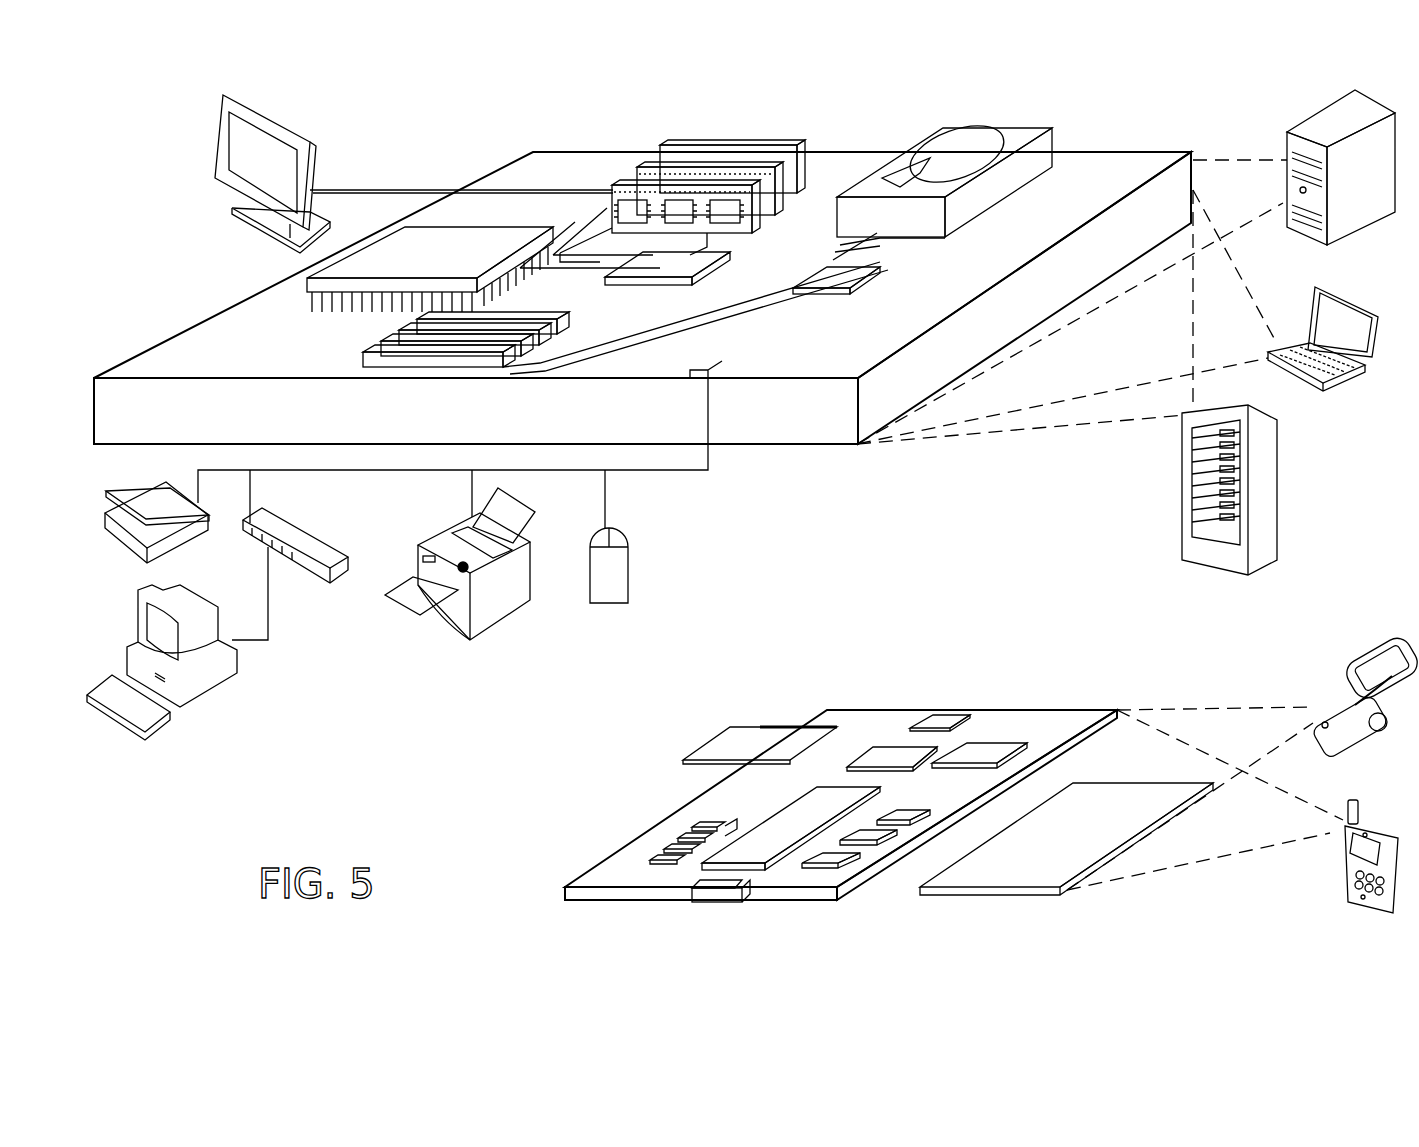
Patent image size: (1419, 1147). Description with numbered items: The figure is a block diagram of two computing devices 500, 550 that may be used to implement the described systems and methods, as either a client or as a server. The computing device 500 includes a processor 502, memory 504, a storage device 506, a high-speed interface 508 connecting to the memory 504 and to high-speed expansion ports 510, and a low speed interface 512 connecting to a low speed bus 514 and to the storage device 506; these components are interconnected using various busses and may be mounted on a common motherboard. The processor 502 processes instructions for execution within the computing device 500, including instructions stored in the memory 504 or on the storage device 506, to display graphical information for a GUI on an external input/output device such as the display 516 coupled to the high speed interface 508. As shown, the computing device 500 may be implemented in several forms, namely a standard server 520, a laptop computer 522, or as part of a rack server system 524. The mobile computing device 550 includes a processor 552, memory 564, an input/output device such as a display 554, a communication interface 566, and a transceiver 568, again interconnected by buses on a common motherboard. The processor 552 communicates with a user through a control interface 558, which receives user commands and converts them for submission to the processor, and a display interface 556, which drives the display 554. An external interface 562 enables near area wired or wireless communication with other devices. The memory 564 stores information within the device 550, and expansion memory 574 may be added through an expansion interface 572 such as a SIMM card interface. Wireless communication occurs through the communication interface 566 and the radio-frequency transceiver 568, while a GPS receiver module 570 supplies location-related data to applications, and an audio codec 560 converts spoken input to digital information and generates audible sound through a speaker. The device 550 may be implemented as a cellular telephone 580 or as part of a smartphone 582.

The computing device 500 is at (445, 113).
The processor 502 is at (282, 292).
The memory 504 is at (670, 142).
The storage device 506 is at (937, 131).
The high-speed interface 508 is at (633, 263).
The high-speed expansion ports 510 is at (387, 337).
The low speed interface 512 is at (857, 273).
The low speed bus 514 is at (720, 377).
The display 516 is at (222, 103).
The standard server 520 is at (1287, 132).
The laptop computer 522 is at (1317, 283).
The rack server system 524 is at (1182, 515).
The computing device 550 is at (816, 688).
The processor 552 is at (765, 873).
The display 554 is at (1067, 893).
The display interface 556 is at (853, 870).
The control interface 558 is at (893, 830).
The audio codec 560 is at (953, 840).
The external interface 562 is at (723, 893).
The memory 564 is at (667, 847).
The communication interface 566 is at (893, 753).
The transceiver 568 is at (980, 753).
The GPS receiver module 570 is at (943, 713).
The expansion interface 572 is at (800, 727).
The expansion memory 574 is at (730, 727).
The cellular telephone 580 is at (1363, 643).
The smartphone 582 is at (1343, 800).